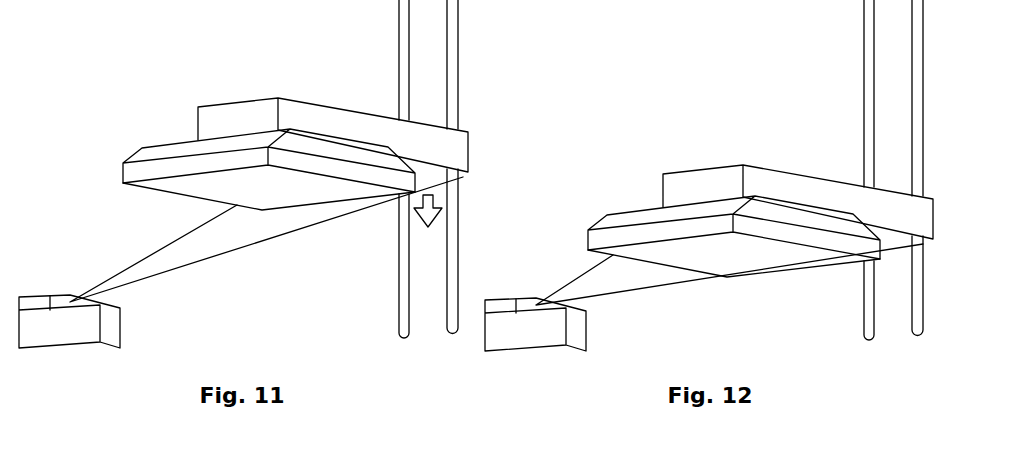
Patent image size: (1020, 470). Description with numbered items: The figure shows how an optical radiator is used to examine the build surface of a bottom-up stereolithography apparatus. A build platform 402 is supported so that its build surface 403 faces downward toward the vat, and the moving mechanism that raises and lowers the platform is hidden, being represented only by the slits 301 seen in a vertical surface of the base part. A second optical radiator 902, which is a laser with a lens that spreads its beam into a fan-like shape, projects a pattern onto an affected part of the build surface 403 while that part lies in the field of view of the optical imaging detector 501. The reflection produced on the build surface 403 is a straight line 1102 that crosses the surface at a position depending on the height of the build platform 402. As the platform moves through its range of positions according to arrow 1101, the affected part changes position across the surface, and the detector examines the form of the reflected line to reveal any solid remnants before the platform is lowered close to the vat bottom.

In FIG. 11, the slits 301 is at (403, 62).
In FIG. 12, the slits 301 is at (893, 170).
In FIG. 11, the build platform 402 is at (160, 146).
In FIG. 12, the build platform 402 is at (734, 227).
In FIG. 11, the build surface 403 is at (197, 182).
In FIG. 12, the build surface 403 is at (734, 263).
In FIG. 11, the optical imaging detector 501 is at (62, 349).
In FIG. 12, the optical imaging detector 501 is at (535, 324).
In FIG. 11, the second optical radiator 902 is at (45, 299).
In FIG. 11, the arrow 1101 is at (463, 182).
In FIG. 11, the straight line 1102 is at (330, 199).
In FIG. 12, the straight line 1102 is at (685, 247).